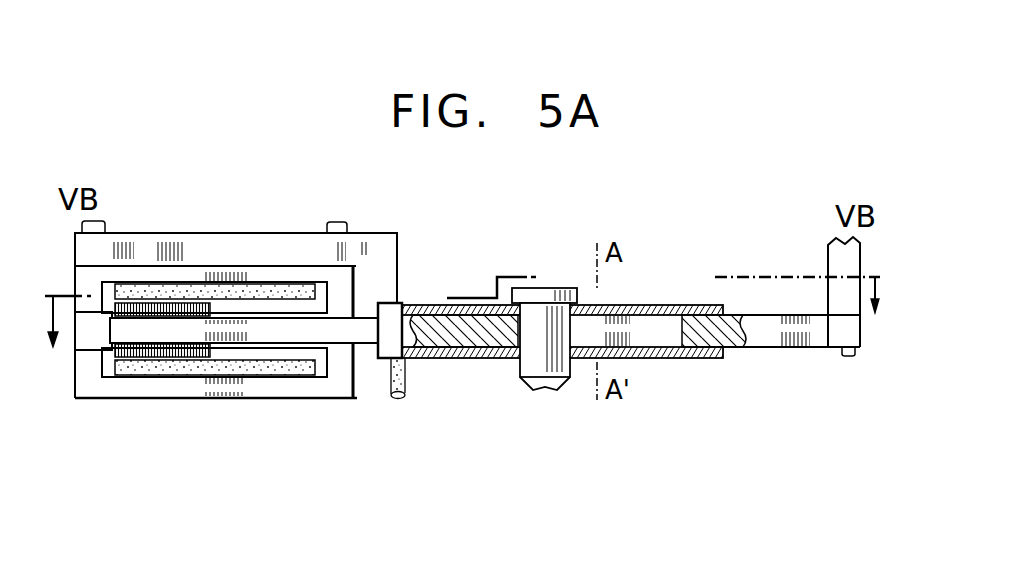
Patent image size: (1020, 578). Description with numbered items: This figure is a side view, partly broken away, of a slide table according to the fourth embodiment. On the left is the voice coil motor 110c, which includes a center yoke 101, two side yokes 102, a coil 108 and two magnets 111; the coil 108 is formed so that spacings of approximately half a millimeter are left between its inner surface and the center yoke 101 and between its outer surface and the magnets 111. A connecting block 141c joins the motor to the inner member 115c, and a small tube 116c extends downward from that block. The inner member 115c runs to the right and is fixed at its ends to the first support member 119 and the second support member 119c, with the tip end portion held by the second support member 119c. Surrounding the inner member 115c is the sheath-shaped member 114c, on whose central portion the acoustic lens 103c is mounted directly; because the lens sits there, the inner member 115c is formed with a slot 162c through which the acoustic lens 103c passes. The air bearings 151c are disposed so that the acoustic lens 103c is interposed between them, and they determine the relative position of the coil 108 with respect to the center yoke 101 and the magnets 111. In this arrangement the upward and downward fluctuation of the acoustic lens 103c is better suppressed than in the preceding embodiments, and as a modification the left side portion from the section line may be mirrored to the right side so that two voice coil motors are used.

The center yoke 101 is at (90, 338).
The side yokes 102 is at (133, 388).
The coil 108 is at (192, 367).
The voice coil motor 110c is at (233, 412).
The magnets 111 is at (258, 370).
The connecting block 141c is at (327, 332).
The lead wire tube 116c is at (392, 382).
The inner member 115c is at (437, 343).
The air bearings 151c is at (495, 357).
The acoustic lens 103c is at (553, 380).
The slot 162c is at (655, 330).
The sheath-shaped member 114c is at (725, 358).
The first support member 119 is at (377, 247).
The second support member 119c is at (835, 262).